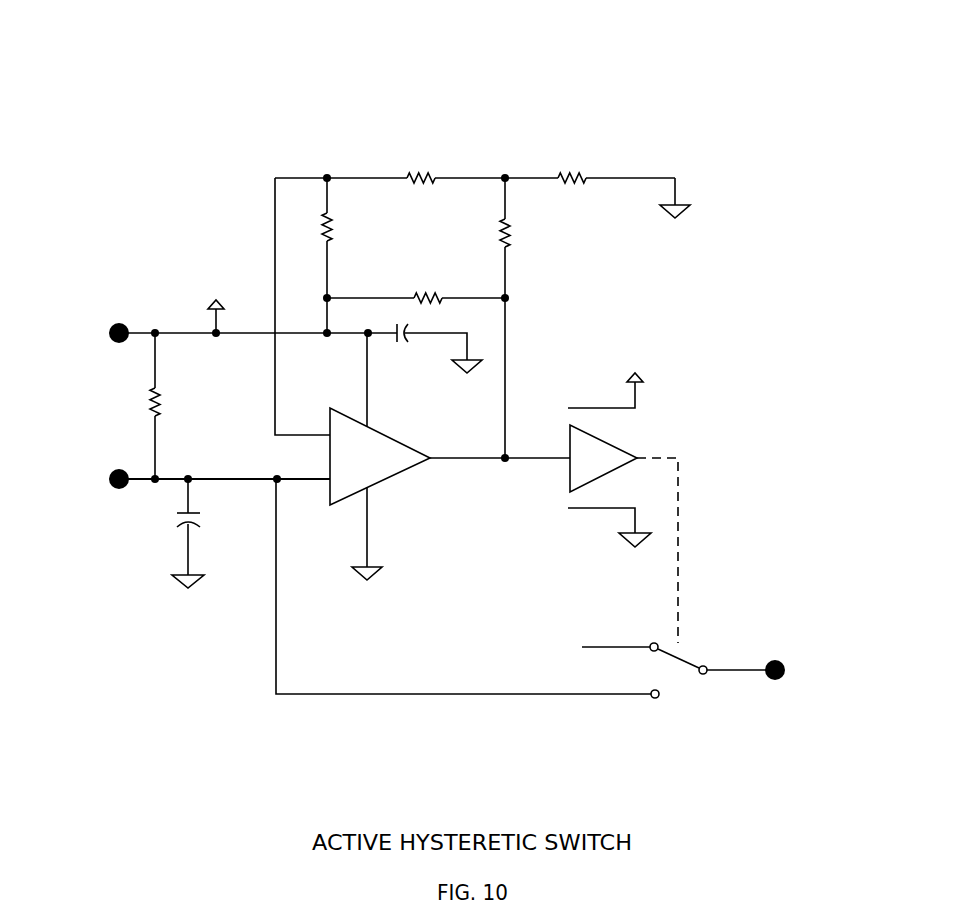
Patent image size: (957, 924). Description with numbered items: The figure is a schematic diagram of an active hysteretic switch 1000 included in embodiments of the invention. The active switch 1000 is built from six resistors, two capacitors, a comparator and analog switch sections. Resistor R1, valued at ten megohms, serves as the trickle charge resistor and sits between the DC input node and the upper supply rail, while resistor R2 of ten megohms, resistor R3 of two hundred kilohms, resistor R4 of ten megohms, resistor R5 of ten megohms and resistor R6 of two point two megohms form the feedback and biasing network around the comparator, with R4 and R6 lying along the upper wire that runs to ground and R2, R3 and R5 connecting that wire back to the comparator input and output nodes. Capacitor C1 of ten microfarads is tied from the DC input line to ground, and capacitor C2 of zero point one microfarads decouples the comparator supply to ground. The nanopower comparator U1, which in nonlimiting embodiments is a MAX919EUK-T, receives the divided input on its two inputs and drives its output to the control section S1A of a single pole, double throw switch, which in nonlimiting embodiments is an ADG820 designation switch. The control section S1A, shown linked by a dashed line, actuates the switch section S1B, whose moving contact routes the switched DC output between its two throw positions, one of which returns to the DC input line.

The active hysteretic switch 1000 is at (88, 36).
The trickle charge resistor R1 is at (183, 403).
The resistor R2 is at (353, 231).
The resistor R3 is at (434, 272).
The resistor R4 is at (425, 151).
The resistor R5 is at (533, 238).
The resistor R6 is at (584, 151).
The capacitor C1 is at (216, 518).
The capacitor C2 is at (401, 359).
The nanopower comparator U1 is at (430, 475).
The single pole, double throw switch S1A is at (646, 444).
The single pole, double throw switch S1B is at (674, 668).